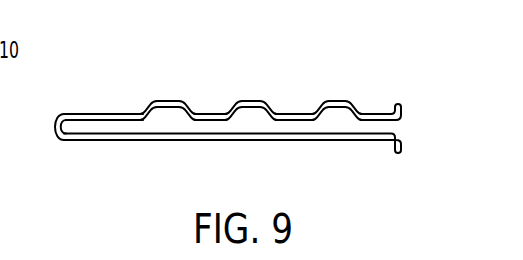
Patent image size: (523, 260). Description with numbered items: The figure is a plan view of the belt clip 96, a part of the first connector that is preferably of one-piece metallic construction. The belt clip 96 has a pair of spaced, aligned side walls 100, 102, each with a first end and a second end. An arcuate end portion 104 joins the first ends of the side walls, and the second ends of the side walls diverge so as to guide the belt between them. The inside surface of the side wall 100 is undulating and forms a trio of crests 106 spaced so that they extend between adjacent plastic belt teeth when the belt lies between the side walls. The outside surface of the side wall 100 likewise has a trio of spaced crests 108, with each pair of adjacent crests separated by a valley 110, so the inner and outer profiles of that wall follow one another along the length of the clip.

The belt clip 96 is at (246, 78).
The side wall 100 is at (367, 98).
The side wall 102 is at (332, 142).
The arcuate end portion 104 is at (55, 127).
The crests 106 is at (212, 119).
The crests 108 is at (262, 100).
The valley 110 is at (203, 113).